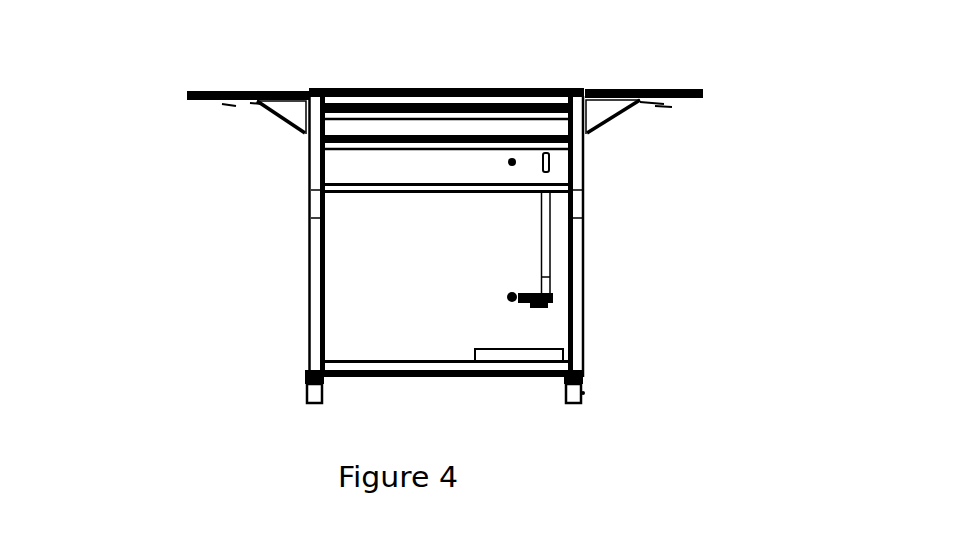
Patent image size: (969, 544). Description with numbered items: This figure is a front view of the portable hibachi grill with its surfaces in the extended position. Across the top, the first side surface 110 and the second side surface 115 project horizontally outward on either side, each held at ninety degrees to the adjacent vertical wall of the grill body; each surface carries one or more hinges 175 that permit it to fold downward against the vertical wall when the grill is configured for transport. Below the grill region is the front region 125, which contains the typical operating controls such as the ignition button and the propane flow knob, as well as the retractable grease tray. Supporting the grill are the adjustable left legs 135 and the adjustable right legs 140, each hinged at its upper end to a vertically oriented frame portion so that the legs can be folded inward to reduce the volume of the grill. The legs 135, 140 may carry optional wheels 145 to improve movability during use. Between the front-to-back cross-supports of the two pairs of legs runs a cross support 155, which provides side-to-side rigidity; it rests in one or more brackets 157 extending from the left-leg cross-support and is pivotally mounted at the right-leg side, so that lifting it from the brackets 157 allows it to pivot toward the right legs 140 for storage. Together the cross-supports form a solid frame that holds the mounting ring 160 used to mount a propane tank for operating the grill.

The first side surface 110 is at (677, 90).
The second side surface 115 is at (190, 97).
The front region 125 is at (350, 170).
The adjustable left leg 135 is at (310, 287).
The adjustable right leg 140 is at (577, 312).
The wheel 145 is at (582, 396).
The cross support 155 is at (400, 372).
The bracket 157 is at (340, 388).
The mounting ring 160 is at (533, 346).
The hinge 175 is at (613, 122).